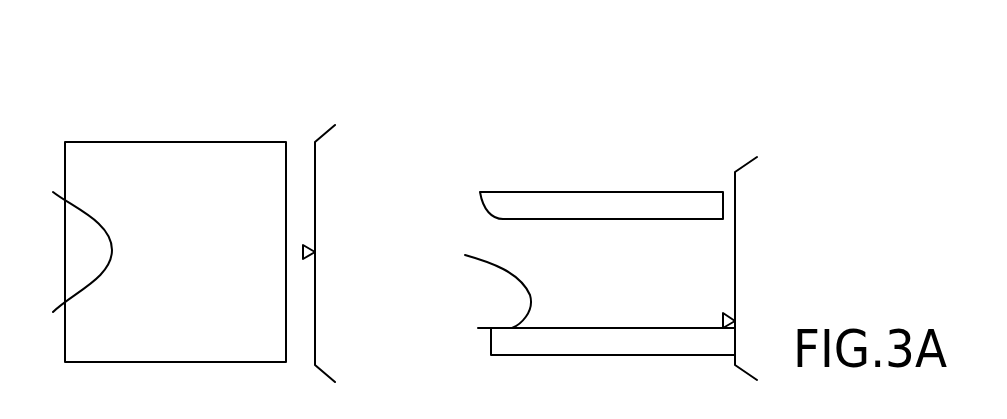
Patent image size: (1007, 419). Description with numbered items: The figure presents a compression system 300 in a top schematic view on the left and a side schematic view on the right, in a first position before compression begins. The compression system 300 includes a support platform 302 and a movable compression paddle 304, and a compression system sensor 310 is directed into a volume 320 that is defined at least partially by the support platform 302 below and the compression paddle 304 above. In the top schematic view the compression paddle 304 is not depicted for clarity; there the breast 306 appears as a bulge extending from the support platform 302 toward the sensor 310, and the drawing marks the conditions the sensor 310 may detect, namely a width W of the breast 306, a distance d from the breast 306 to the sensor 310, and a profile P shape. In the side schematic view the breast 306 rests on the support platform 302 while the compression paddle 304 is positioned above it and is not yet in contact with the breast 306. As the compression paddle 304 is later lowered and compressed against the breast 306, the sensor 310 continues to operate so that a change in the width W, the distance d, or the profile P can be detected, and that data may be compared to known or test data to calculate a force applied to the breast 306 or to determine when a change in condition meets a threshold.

The compression system 300 is at (288, 82).
The support platform 302 is at (223, 150).
The movable compression paddle 304 is at (562, 205).
The breast 306 is at (90, 270).
The compression system sensor 310 is at (312, 244).
The volume 320 is at (653, 248).
The profile shape P is at (122, 240).
The breast maximum width W is at (33, 208).
The distance to the sensor d is at (126, 253).